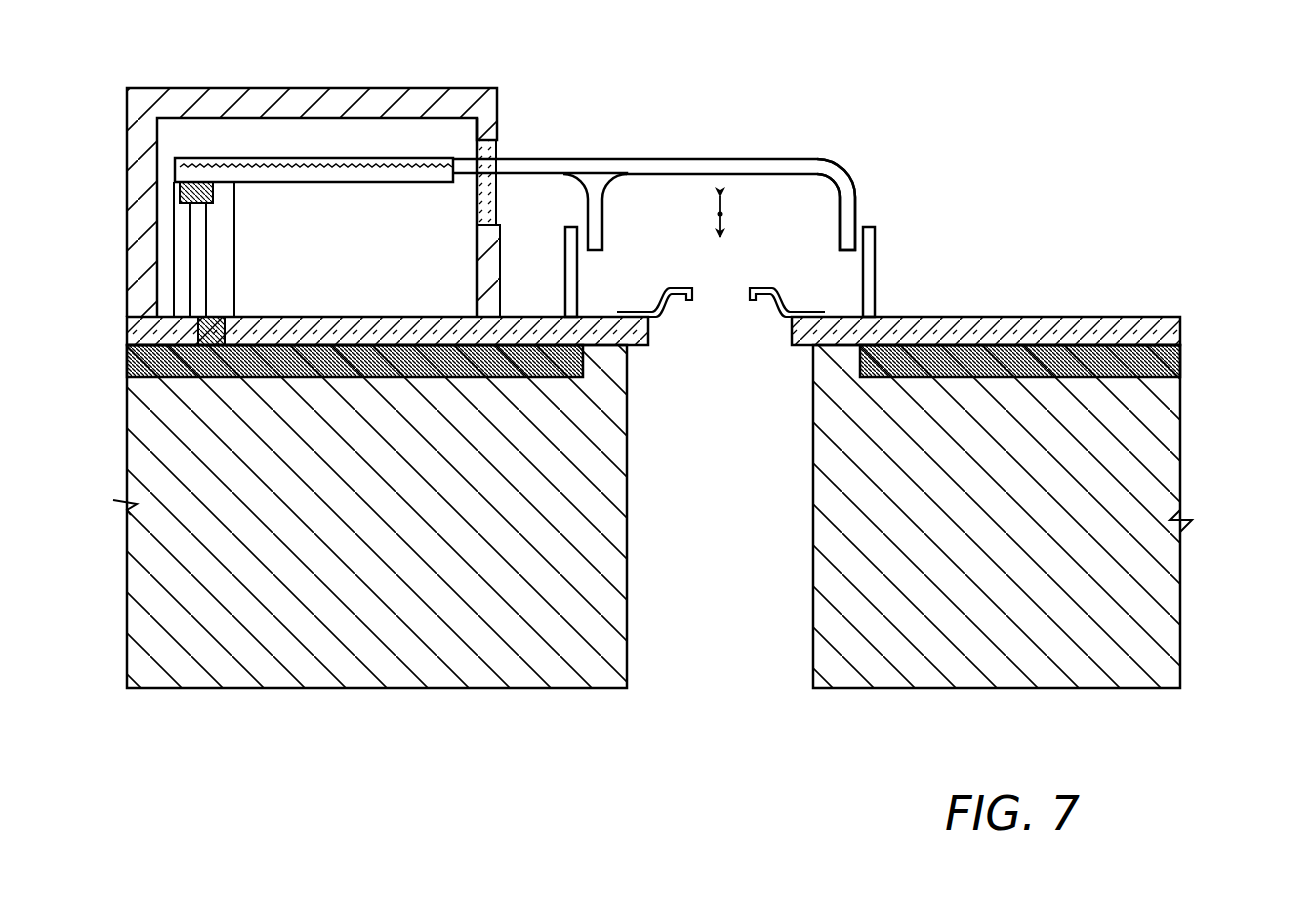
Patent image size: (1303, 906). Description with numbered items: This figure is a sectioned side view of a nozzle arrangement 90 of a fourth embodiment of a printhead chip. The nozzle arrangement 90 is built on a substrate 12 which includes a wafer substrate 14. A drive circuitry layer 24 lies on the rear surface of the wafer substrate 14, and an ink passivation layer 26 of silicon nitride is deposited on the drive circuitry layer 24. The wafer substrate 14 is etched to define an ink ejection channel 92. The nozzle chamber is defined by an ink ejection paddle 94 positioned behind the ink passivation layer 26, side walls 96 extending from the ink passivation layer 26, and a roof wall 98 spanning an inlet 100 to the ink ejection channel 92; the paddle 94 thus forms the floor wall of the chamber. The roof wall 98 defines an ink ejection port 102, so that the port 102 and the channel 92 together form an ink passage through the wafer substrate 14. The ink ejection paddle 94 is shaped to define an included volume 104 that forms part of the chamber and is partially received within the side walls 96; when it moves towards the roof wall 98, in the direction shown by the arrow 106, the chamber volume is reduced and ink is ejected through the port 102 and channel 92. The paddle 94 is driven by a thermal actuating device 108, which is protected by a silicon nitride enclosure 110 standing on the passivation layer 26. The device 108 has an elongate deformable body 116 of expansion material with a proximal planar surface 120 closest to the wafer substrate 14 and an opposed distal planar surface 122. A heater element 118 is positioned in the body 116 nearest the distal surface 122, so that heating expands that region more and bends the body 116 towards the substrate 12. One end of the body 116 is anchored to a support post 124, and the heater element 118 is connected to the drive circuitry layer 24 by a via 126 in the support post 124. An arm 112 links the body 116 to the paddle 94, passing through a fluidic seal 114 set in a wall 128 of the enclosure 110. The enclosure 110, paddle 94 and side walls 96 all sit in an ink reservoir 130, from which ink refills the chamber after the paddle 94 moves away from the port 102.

The substrate 12 is at (690, 516).
The wafer substrate 14 is at (1165, 615).
The drive circuitry layer 24 is at (1182, 365).
The ink passivation layer 26 is at (1182, 320).
The nozzle arrangement 90 is at (1115, 210).
The ink ejection channel 92 is at (699, 667).
The ink ejection paddle 94 is at (853, 173).
The side walls 96 is at (578, 282).
The roof wall 98 is at (679, 301).
The inlet 100 is at (738, 377).
The ink ejection port 102 is at (721, 293).
The included volume 104 is at (648, 198).
The arrow 106 is at (720, 188).
The thermal actuating device 108 is at (424, 141).
The silicon nitride enclosure 110 is at (273, 88).
The arm 112 is at (513, 157).
The fluidic seal 114 is at (478, 195).
The deformable body 116 is at (335, 183).
The heater element 118 is at (298, 104).
The proximal planar surface 120 is at (267, 183).
The distal planar surface 122 is at (232, 158).
The support post 124 is at (175, 252).
The via 126 is at (180, 190).
The wall 128 is at (478, 262).
The ink reservoir 130 is at (1035, 98).